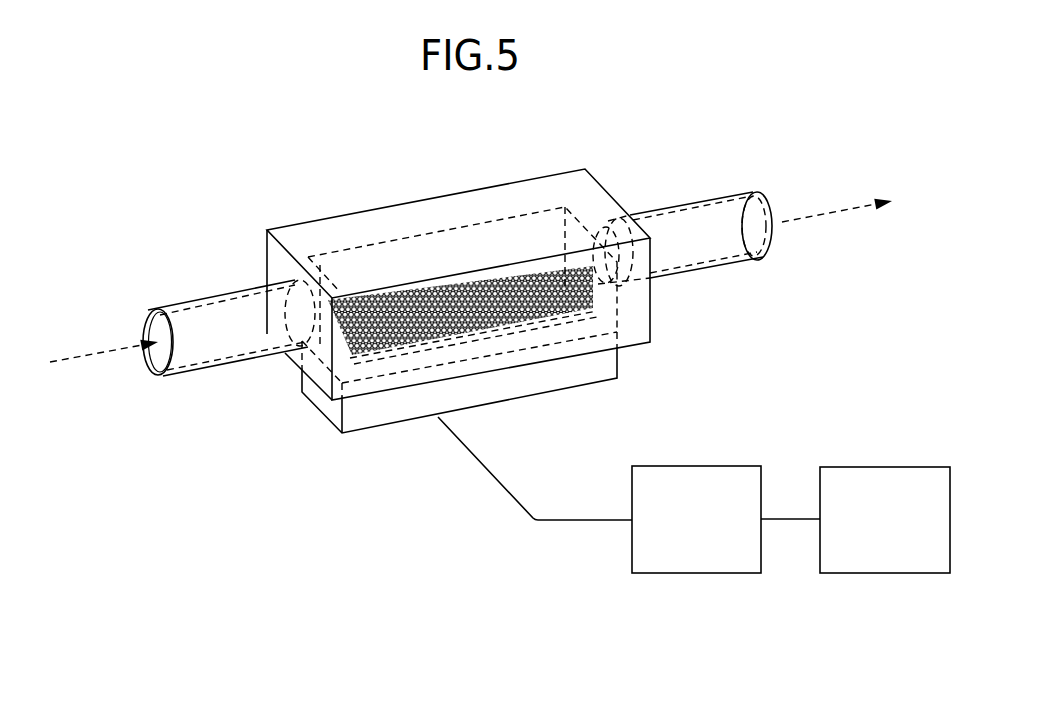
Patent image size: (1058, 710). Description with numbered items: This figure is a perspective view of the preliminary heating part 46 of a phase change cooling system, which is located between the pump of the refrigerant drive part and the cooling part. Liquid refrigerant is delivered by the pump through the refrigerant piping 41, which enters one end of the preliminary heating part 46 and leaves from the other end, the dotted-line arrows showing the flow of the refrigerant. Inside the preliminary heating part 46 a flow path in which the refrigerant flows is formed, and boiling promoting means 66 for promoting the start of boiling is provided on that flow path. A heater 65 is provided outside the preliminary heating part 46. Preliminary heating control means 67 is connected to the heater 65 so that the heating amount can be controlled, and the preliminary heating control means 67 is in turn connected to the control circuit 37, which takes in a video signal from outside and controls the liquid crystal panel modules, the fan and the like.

The preliminary heating part 46 is at (421, 185).
The refrigerant piping 41 is at (215, 298).
The boiling promoting means 66 is at (553, 314).
The heater 65 is at (365, 413).
The preliminary heating control means 67 is at (697, 466).
The control circuit 37 is at (885, 467).